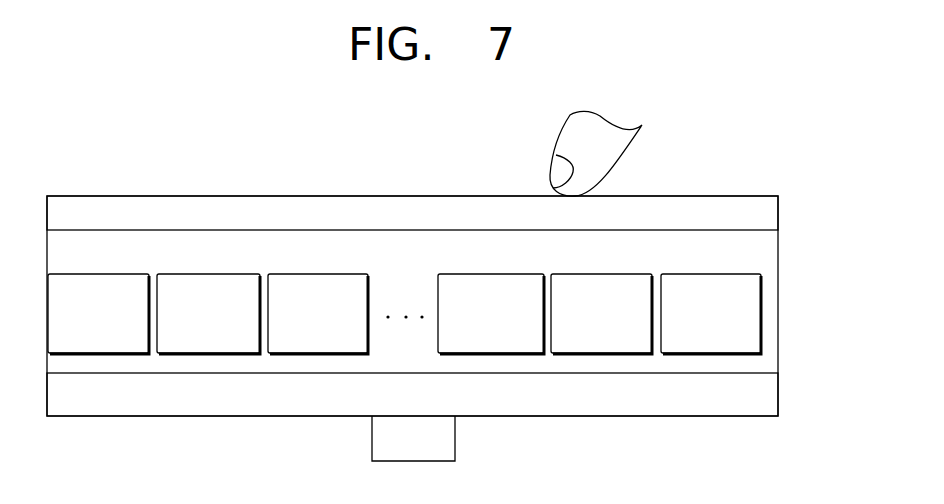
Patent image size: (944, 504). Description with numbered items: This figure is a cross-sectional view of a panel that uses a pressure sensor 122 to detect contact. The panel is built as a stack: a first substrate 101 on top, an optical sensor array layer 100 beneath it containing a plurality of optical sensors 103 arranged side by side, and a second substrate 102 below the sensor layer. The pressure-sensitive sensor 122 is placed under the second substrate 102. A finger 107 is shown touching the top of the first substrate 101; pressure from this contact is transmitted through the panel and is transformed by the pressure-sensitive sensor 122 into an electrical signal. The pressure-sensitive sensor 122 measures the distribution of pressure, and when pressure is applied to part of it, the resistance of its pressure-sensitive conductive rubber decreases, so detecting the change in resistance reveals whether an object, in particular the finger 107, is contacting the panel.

The optical sensor array layer 100 is at (778, 283).
The first substrate 101 is at (767, 212).
The second substrate 102 is at (767, 388).
The optical sensor 103 is at (707, 272).
The finger 107 is at (620, 150).
The pressure-sensitive sensor 122 is at (443, 438).